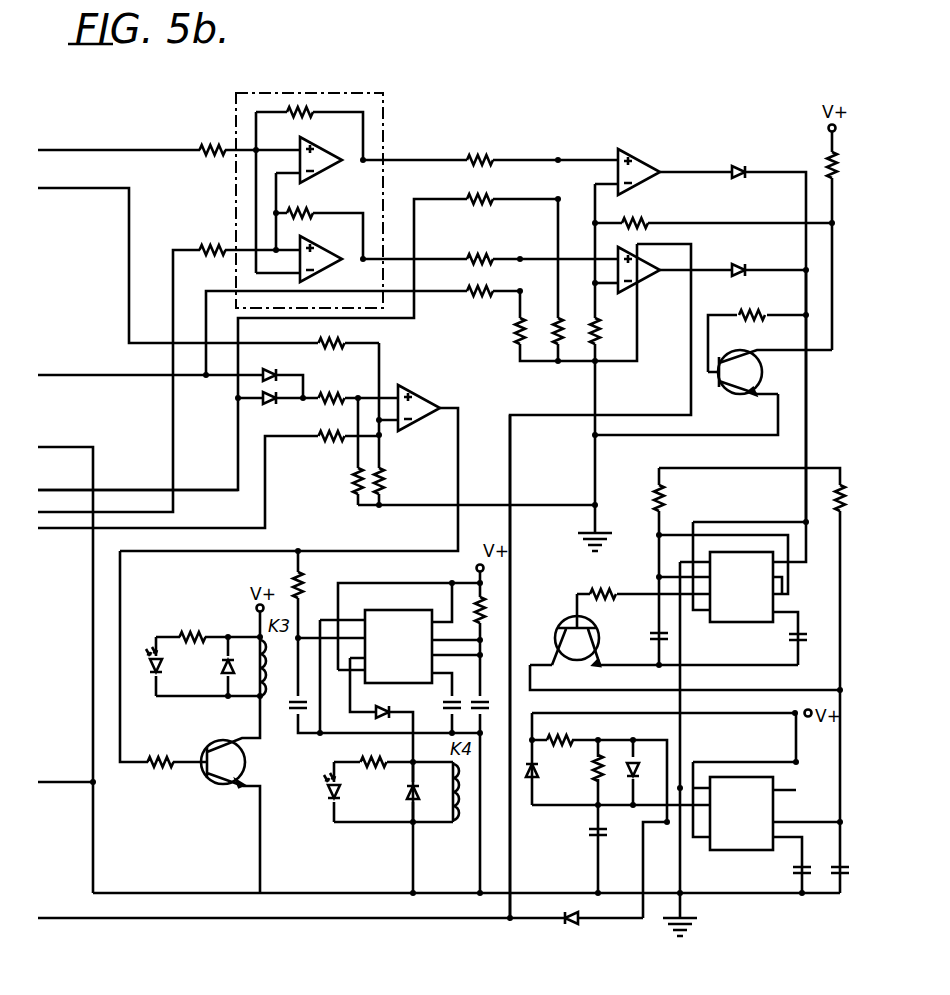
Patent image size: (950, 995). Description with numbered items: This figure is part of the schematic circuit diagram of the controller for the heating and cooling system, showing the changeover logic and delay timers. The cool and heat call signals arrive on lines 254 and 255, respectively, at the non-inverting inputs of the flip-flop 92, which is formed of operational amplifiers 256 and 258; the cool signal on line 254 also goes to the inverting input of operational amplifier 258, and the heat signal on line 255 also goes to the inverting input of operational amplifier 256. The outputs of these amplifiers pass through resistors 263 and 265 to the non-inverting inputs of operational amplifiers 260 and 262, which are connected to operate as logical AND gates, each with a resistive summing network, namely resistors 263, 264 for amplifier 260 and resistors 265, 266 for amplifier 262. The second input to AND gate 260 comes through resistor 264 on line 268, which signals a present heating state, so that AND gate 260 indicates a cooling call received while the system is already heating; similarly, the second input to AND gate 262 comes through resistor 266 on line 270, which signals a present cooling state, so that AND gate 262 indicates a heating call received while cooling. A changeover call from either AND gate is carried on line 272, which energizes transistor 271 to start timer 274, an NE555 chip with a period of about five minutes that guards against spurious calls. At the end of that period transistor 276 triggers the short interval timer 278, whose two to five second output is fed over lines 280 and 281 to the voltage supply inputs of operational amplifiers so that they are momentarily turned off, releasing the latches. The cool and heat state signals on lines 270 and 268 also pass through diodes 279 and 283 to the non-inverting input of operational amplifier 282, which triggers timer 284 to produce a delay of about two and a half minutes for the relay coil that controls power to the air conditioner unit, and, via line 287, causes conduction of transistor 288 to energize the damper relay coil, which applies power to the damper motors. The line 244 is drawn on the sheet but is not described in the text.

The flip-flop 92 is at (386, 108).
The line 254 is at (78, 150).
The line 255 is at (173, 505).
The operational amplifier 256 is at (322, 132).
The operational amplifier 258 is at (322, 234).
The operational amplifier 260 is at (645, 150).
The operational amplifier 262 is at (648, 256).
The resistor 263 is at (482, 160).
The resistor 264 is at (482, 199).
The resistor 265 is at (482, 259).
The resistor 266 is at (478, 296).
The line 268 is at (106, 490).
The line 270 is at (58, 375).
The transistor 271 is at (748, 350).
The line 272 is at (806, 293).
The timer 274 is at (717, 625).
The transistor 276 is at (561, 624).
The timer 278 is at (746, 852).
The diode 279 is at (272, 368).
The line 280 is at (392, 920).
The line 281 is at (512, 850).
The operational amplifier 282 is at (415, 388).
The diode 283 is at (270, 404).
The timer 284 is at (378, 610).
The line 287 is at (160, 553).
The transistor 288 is at (222, 787).
The line 244 is at (62, 447).